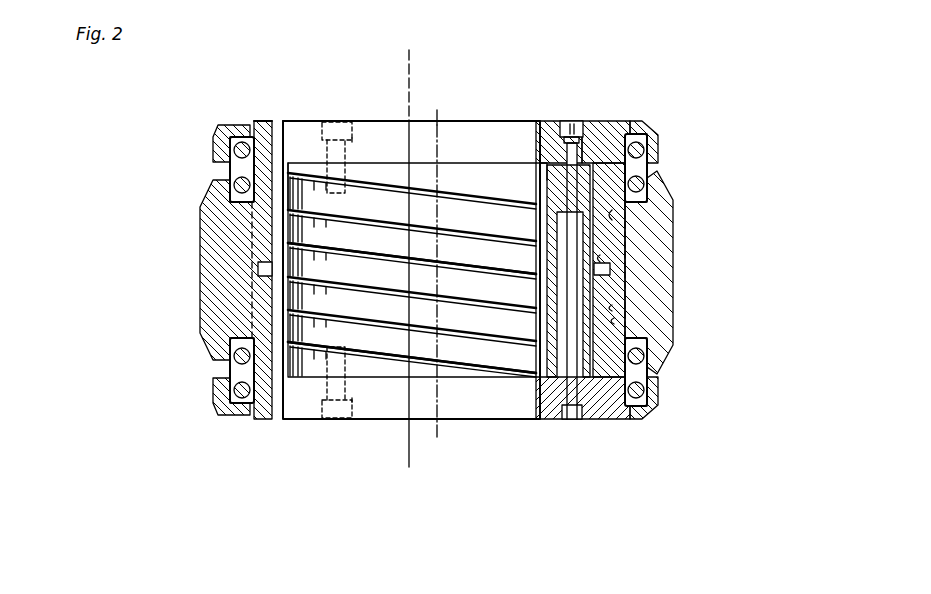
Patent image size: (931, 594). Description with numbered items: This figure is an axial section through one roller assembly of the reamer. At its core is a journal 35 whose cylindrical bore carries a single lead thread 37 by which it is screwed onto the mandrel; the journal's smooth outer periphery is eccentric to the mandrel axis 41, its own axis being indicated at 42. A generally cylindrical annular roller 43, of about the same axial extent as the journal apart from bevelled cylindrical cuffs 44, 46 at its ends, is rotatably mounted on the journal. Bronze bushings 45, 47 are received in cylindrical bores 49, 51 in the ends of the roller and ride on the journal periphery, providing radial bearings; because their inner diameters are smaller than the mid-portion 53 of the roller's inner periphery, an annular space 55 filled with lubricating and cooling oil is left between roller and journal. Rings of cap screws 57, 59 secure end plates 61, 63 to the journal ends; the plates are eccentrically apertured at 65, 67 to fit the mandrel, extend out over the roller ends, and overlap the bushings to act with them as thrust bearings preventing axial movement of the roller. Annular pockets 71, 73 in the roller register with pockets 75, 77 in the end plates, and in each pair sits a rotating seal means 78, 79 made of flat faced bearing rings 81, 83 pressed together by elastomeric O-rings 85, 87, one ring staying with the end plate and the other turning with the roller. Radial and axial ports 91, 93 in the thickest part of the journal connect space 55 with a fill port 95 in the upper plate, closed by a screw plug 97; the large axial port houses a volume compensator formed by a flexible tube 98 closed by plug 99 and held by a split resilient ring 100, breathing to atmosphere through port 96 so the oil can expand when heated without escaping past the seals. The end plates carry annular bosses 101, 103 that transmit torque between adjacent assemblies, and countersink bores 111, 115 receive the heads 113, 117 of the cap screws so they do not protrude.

The journal 35 is at (537, 290).
The single lead thread 37 is at (530, 300).
The axis of the mandrel 41 is at (409, 462).
The axis of the eccentric outer periphery of the journal 42 is at (437, 440).
The roller 43 is at (662, 292).
The cylindrical cuff 44 is at (228, 182).
The bushing 45 is at (619, 230).
The cylindrical cuff 46 is at (210, 362).
The bushing 47 is at (610, 310).
The cylindrical bore 49 is at (613, 216).
The cylindrical bore 51 is at (614, 321).
The mid-portion of the inner periphery of the roller 53 is at (611, 268).
The annular space 55 is at (258, 268).
The cap screws 57 is at (352, 140).
The cap screws 59 is at (352, 400).
The upper end plate 61 is at (652, 122).
The lower end plate 63 is at (650, 418).
The eccentric aperture 65 is at (537, 127).
The eccentric aperture 67 is at (540, 420).
The annular pocket 71 is at (205, 210).
The annular pocket 73 is at (234, 352).
The annular pocket 75 is at (216, 131).
The annular pocket 77 is at (226, 408).
The rotating seal means 78 is at (650, 167).
The rotating seal means 79 is at (650, 372).
The bearing ring 81 is at (284, 143).
The bearing ring 83 is at (289, 184).
The O-ring 85 is at (234, 151).
The O-ring 87 is at (234, 186).
The radial port 91 is at (602, 259).
The axial port 93 is at (590, 140).
The fill port 95 is at (551, 148).
The port 96 is at (575, 420).
The screw plug 97 is at (574, 121).
The flexible tube 98 is at (538, 258).
The plug 99 is at (566, 186).
The split resilient ring 100 is at (540, 372).
The annular boss 101 is at (248, 120).
The annular boss 103 is at (250, 420).
The countersink bore 111 is at (338, 419).
The bolt head 113 is at (322, 418).
The countersink bore 115 is at (348, 121).
The bolt head 117 is at (326, 121).